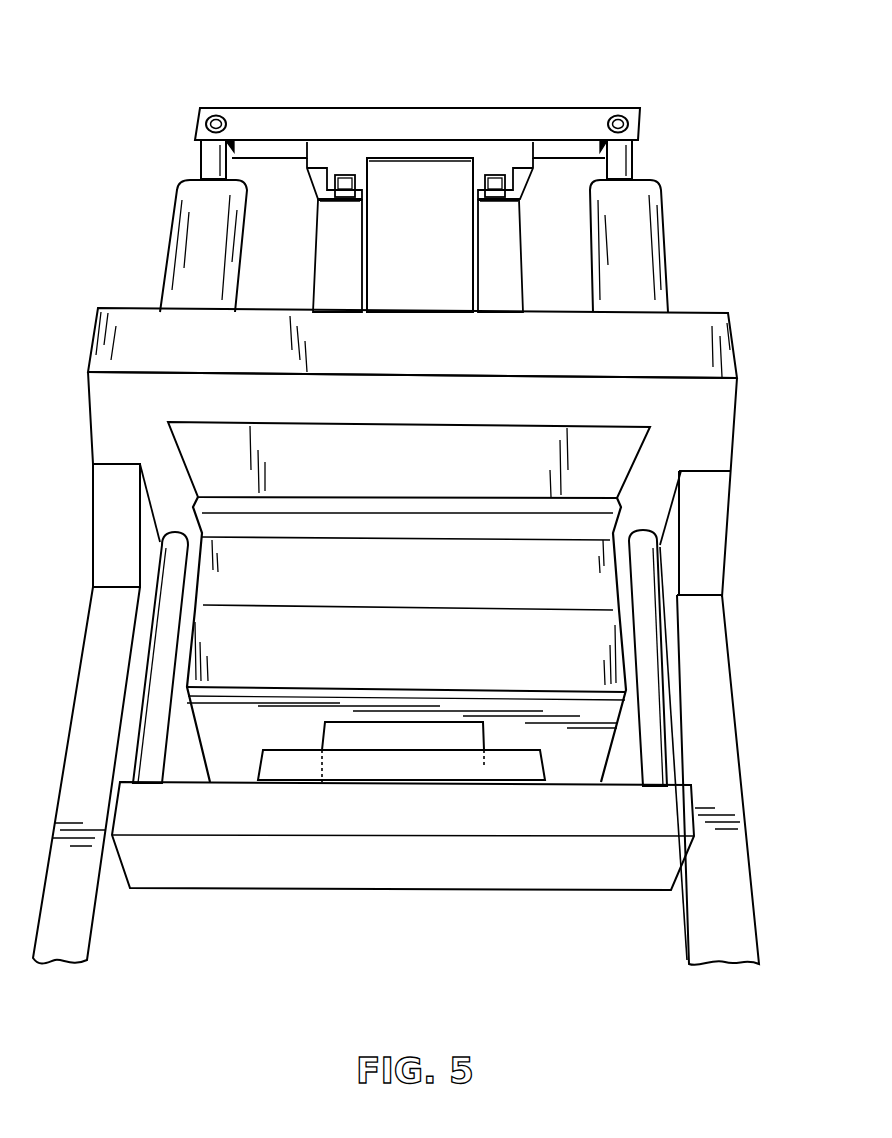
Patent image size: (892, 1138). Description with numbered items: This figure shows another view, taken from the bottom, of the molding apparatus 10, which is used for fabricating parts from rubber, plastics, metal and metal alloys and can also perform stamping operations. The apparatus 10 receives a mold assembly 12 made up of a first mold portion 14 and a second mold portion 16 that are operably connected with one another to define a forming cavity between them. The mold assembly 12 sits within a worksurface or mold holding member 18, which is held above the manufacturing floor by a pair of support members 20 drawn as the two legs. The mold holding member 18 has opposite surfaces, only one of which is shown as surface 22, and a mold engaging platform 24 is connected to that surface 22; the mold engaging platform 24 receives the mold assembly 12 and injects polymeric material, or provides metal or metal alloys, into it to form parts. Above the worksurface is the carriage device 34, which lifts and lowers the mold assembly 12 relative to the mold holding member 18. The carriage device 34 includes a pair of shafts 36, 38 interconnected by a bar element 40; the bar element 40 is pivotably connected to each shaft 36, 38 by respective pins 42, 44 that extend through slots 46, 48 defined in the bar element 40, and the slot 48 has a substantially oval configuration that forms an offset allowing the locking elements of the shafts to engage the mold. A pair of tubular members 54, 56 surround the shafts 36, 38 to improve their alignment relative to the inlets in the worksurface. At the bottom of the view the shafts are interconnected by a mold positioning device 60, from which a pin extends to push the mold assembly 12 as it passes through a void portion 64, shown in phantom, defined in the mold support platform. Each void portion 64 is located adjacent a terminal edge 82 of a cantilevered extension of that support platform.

The molding apparatus 10 is at (140, 103).
The mold assembly 12 is at (312, 655).
The first mold portion 14 is at (404, 587).
The second mold portion 16 is at (404, 660).
The mold holding member 18 is at (693, 333).
The support members 20 is at (272, 308).
The surface 22 is at (143, 402).
The mold engaging platform 24 is at (598, 467).
The carriage device 34 is at (353, 158).
The shaft 36 is at (638, 168).
The shaft 38 is at (208, 165).
The bar element 40 is at (487, 120).
The pin 42 is at (617, 116).
The pin 44 is at (214, 117).
The slot 46 is at (630, 127).
The slot 48 is at (221, 121).
The tubular member 54 is at (638, 231).
The tubular member 56 is at (193, 245).
The mold positioning device 60 is at (417, 815).
The void portion 64 is at (484, 767).
The terminal edge 82 is at (290, 770).